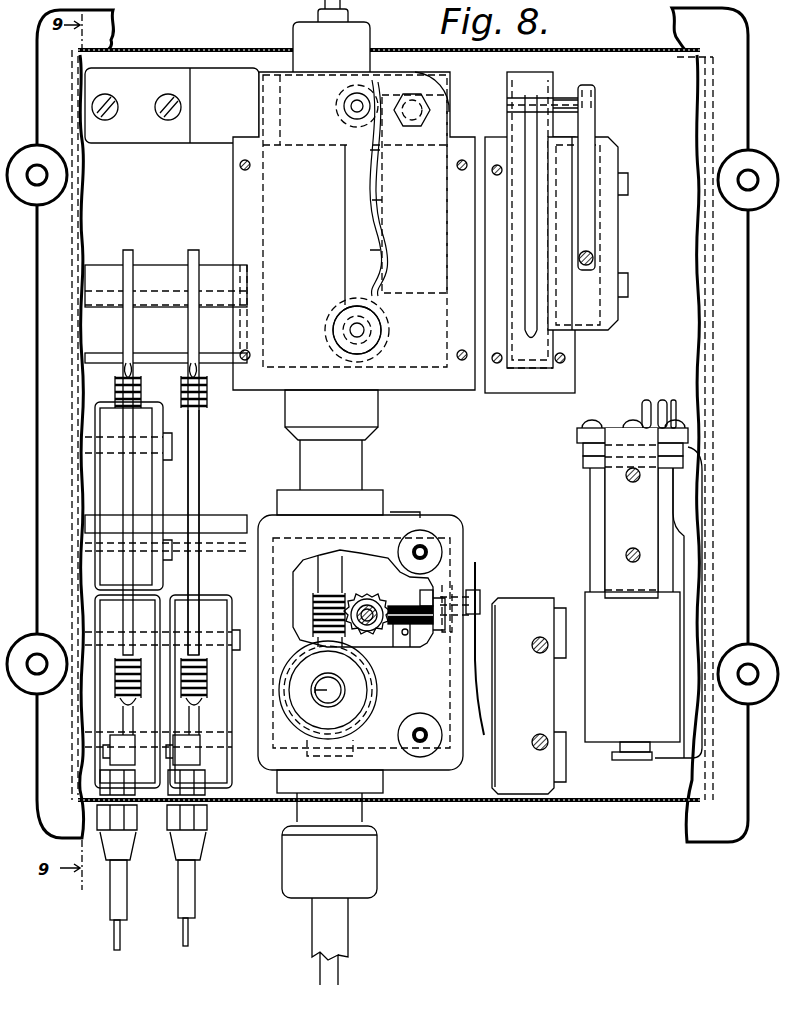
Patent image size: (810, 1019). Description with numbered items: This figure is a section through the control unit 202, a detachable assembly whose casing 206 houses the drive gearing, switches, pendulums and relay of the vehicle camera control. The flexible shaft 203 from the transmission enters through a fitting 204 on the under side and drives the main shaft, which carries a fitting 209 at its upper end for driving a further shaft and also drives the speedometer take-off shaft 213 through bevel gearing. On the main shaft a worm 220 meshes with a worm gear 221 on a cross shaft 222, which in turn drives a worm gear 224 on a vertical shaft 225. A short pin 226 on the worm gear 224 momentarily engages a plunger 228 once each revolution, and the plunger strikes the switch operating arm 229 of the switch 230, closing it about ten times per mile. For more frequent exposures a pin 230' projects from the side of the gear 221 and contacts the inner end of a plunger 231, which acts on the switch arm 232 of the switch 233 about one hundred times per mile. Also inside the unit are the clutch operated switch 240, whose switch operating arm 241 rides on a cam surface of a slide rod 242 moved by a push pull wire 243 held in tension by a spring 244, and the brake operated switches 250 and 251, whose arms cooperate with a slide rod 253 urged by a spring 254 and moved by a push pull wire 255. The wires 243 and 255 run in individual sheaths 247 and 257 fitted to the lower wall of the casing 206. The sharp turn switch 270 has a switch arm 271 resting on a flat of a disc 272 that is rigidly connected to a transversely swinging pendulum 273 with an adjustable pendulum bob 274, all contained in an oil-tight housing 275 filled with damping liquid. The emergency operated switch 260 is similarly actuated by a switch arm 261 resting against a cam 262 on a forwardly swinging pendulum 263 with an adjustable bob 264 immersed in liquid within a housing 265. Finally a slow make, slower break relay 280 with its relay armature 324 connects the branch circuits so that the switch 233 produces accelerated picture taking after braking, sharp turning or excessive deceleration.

The control unit 202 is at (604, 806).
The flexible shaft 203 is at (332, 972).
The fitting 204 is at (378, 858).
The casing 206 is at (412, 762).
The fitting 209 is at (378, 410).
The speedometer take-off shaft 213 is at (340, 692).
The worm 220 is at (318, 622).
The worm gear 221 is at (368, 597).
The cross shaft 222 is at (372, 636).
The worm gear 224 is at (394, 642).
The vertical shaft 225 is at (408, 583).
The short pin 226 is at (452, 574).
The plunger 228 is at (477, 596).
The switch operating arm 229 is at (477, 579).
The switch 230 is at (534, 681).
The pin 230' is at (404, 637).
The plunger 231 is at (418, 630).
The switch arm 232 is at (478, 654).
The switch 233 is at (522, 778).
The clutch operated switch 240 is at (207, 600).
The switch operating arm 241 is at (197, 633).
The slide rod 242 is at (197, 503).
The push pull wire 243 is at (190, 931).
The spring 244 is at (202, 407).
The sheath 247 is at (196, 895).
The brake operated switch 250 is at (108, 722).
The brake operated switch 251 is at (105, 563).
The slide rod 253 is at (135, 333).
The spring 254 is at (134, 394).
The push pull wire 255 is at (122, 938).
The sheath 257 is at (126, 893).
The emergency operated switch 260 is at (603, 257).
The switch arm 261 is at (585, 178).
The cam 262 is at (592, 100).
The pendulum 263 is at (522, 280).
The adjustable bob 264 is at (518, 362).
The housing 265 is at (497, 228).
The sharp turn switch 270 is at (419, 298).
The switch arm 271 is at (384, 164).
The disc 272 is at (337, 107).
The pendulum 273 is at (345, 246).
The pendulum bob 274 is at (330, 340).
The oil-tight housing 275 is at (258, 219).
The relay 280 is at (639, 579).
The relay armature 324 is at (618, 757).